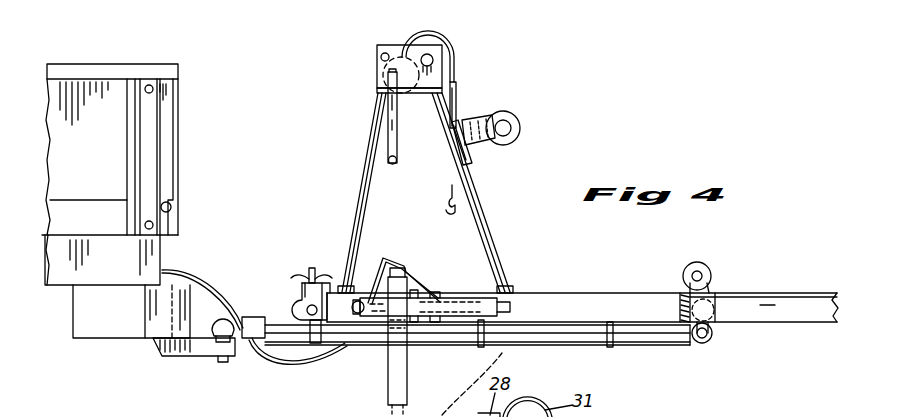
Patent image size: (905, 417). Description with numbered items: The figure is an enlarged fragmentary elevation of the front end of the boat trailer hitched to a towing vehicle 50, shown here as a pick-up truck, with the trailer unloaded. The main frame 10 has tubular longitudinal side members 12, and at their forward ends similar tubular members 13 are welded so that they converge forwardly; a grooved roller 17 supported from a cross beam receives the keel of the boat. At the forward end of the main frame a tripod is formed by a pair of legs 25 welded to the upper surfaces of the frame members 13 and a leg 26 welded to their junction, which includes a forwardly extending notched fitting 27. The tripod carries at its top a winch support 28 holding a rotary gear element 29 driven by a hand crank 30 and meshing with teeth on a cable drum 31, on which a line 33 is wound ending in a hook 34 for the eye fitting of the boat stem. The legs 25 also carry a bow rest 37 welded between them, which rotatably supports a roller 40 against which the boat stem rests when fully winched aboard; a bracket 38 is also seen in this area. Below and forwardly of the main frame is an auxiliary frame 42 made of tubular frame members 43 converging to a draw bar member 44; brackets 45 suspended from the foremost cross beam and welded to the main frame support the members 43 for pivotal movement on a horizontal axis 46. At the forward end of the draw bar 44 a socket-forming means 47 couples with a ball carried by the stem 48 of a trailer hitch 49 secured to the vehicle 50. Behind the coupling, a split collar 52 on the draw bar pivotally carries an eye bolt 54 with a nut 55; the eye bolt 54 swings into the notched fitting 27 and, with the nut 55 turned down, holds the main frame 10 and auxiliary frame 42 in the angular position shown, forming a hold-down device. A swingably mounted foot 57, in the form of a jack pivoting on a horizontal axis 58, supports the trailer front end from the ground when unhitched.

The main frame 10 is at (750, 292).
The tubular longitudinal side member 12 is at (768, 318).
The tubular member 13 is at (572, 310).
The grooved roller 17 is at (705, 262).
The leg 25 is at (490, 236).
The leg 26 is at (368, 142).
The notched fitting 27 is at (300, 290).
The winch support 28 is at (376, 50).
The rotary gear element 29 is at (380, 80).
The hand crank 30 is at (398, 143).
The cable drum 31 is at (455, 48).
The line 33 is at (456, 88).
The hook 34 is at (445, 212).
The bow rest 37 is at (483, 110).
The winch bracket 38 is at (482, 143).
The roller 40 is at (520, 124).
The auxiliary frame 42 is at (650, 352).
The tubular frame member 43 is at (560, 345).
The draw bar member 44 is at (280, 345).
The bracket 45 is at (712, 332).
The horizontal axis 46 is at (700, 345).
The socket-forming means 47 is at (228, 318).
The stem 48 is at (222, 360).
The trailer hitch 49 is at (175, 358).
The towing vehicle 50 is at (80, 345).
The split collar 52 is at (316, 345).
The eye bolt 54 is at (330, 280).
The nut 55 is at (310, 276).
The foot 57 is at (452, 318).
The horizontal axis 58 is at (420, 285).